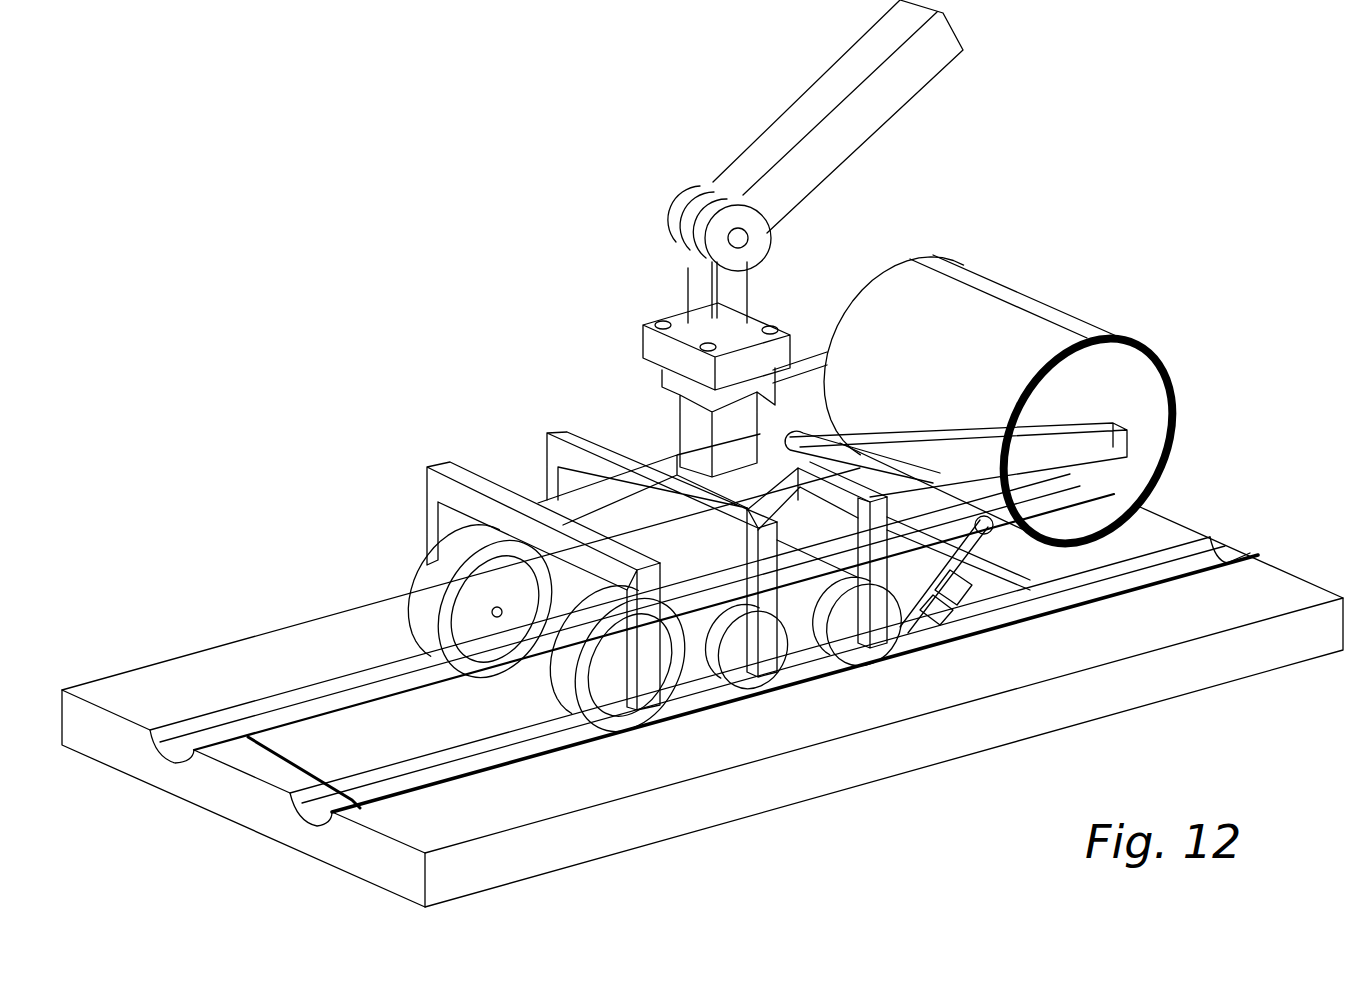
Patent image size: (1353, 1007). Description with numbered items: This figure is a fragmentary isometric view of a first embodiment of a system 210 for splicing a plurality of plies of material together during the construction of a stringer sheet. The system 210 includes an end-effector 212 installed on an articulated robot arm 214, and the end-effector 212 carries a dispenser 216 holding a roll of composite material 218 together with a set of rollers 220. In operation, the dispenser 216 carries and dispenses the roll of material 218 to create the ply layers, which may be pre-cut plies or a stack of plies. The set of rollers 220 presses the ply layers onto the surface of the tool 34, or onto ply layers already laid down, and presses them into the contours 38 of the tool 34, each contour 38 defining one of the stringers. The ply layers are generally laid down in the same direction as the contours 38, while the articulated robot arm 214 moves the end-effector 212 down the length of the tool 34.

The tool 34 is at (230, 800).
The contour 38 is at (300, 833).
The system 210 is at (1087, 185).
The end-effector 212 is at (867, 693).
The articulated robot arm 214 is at (660, 162).
The dispenser 216 is at (1167, 460).
The roll of composite material 218 is at (1097, 540).
The set of rollers 220 is at (760, 702).